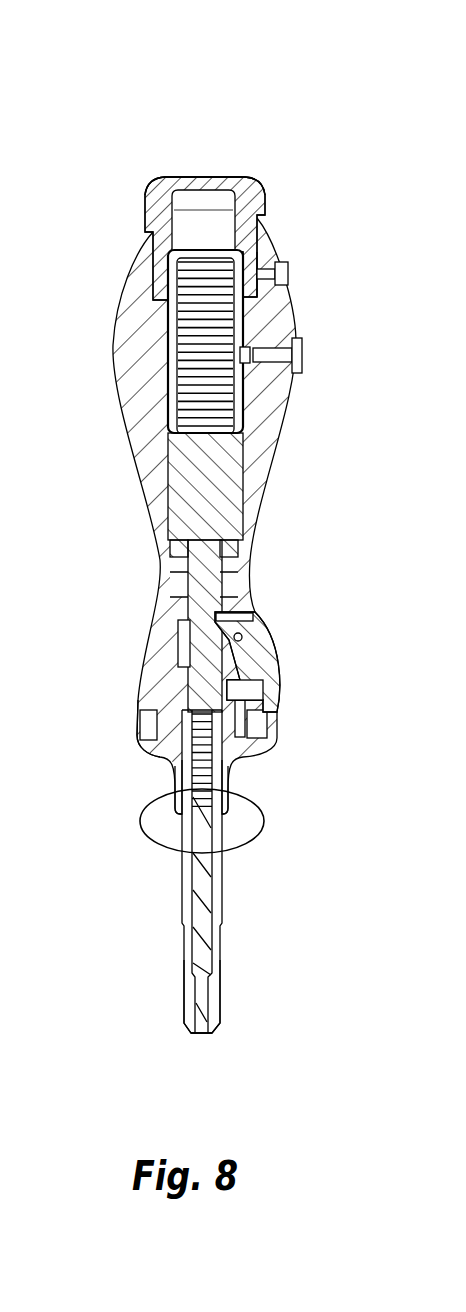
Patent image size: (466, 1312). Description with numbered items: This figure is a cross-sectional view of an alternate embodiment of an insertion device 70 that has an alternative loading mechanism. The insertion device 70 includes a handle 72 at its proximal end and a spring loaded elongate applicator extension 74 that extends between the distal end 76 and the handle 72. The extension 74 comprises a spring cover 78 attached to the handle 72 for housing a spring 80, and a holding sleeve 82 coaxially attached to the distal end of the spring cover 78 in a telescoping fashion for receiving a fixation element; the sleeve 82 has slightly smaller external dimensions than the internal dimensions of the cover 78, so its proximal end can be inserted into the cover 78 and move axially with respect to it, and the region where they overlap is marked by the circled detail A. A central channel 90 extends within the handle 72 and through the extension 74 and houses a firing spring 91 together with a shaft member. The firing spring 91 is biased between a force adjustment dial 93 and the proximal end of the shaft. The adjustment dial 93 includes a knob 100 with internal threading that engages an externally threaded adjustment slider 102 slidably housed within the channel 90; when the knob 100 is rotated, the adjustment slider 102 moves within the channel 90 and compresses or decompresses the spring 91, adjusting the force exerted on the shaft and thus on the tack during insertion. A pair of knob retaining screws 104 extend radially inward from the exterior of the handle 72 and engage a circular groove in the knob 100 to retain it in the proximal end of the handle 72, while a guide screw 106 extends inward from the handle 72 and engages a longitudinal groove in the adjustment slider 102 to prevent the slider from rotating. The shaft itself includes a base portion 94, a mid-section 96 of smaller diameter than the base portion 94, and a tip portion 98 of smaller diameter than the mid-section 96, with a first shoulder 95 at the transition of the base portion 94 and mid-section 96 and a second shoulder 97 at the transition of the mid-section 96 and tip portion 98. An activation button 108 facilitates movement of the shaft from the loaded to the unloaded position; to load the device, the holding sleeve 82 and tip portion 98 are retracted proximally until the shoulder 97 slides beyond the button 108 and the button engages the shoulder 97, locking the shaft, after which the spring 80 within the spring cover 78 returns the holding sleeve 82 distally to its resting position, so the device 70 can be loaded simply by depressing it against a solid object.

The insertion device 70 is at (296, 98).
The handle 72 is at (135, 456).
The elongate applicator extension 74 is at (178, 1000).
The distal end 76 is at (221, 1036).
The spring cover 78 is at (174, 780).
The spring 80 is at (218, 755).
The holding sleeve 82 is at (224, 876).
The central channel 90 is at (187, 637).
The firing spring 91 is at (183, 380).
The force adjustment dial 93 is at (233, 218).
The base portion 94 is at (235, 490).
The first shoulder 95 is at (238, 552).
The mid-section 96 is at (240, 580).
The second shoulder 97 is at (246, 625).
The tip portion 98 is at (178, 676).
The knob 100 is at (262, 203).
The adjustment slider 102 is at (262, 297).
The knob retaining screws 104 is at (293, 268).
The guide screw 106 is at (306, 348).
The activation button 108 is at (281, 666).
The detail region A is at (263, 817).